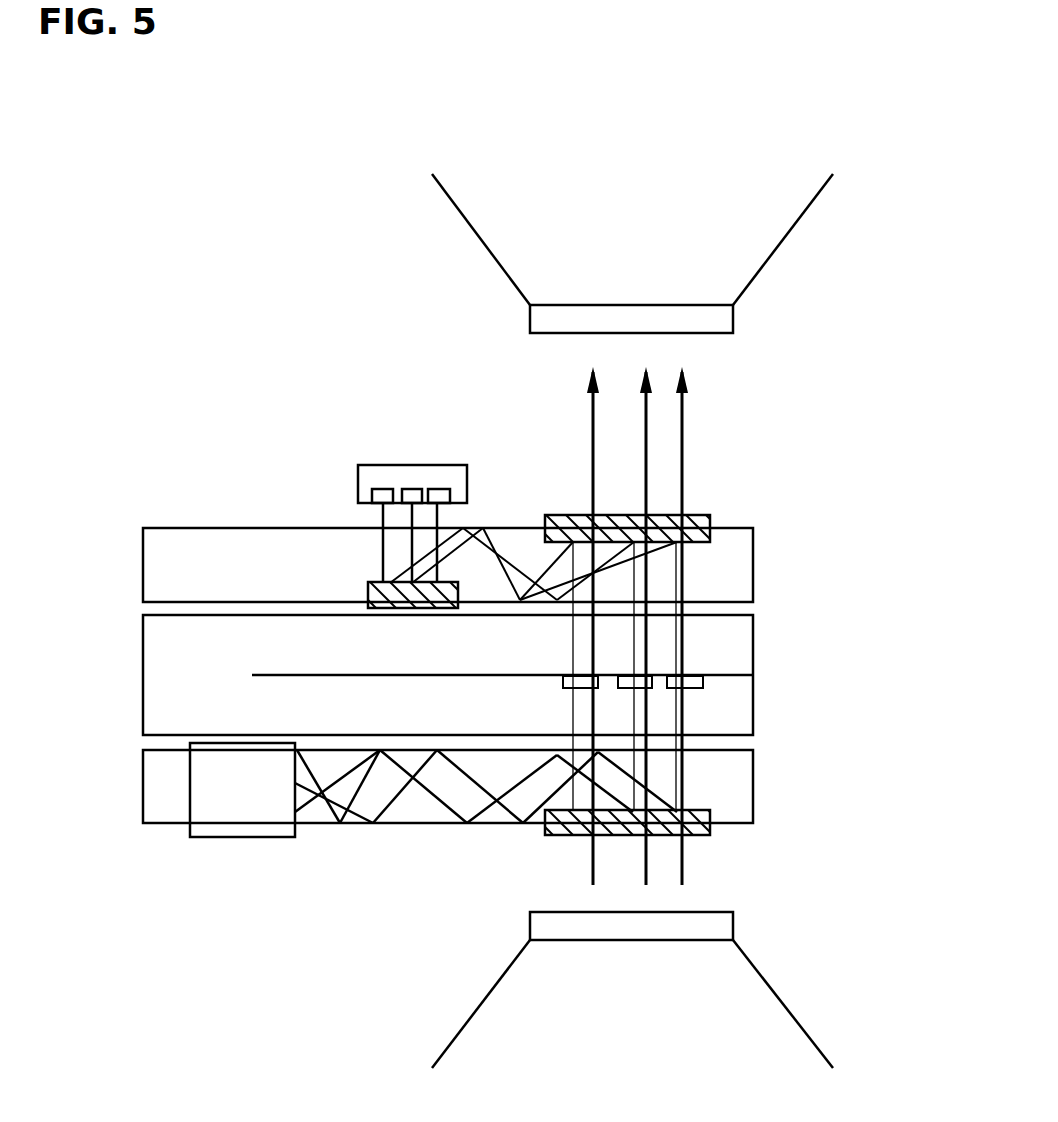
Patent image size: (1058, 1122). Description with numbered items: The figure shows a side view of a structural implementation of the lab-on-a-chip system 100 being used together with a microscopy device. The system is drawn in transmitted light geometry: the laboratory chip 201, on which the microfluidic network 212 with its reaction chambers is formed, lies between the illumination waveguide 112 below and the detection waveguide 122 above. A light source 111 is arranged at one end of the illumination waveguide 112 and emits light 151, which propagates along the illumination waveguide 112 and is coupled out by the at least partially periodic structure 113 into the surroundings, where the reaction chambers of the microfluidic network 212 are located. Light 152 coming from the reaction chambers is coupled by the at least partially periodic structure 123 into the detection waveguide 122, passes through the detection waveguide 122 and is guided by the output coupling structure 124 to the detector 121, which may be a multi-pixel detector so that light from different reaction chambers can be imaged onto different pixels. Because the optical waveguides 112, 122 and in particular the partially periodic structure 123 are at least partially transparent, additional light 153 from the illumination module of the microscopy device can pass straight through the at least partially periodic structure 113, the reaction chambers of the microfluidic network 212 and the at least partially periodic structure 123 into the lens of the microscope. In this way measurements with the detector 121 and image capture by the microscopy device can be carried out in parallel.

The lab-on-a-chip system 100 is at (820, 463).
The light source 111 is at (242, 790).
The illumination waveguide 112 is at (147, 773).
The at least partially periodic structure 113 is at (710, 833).
The detector 121 is at (465, 478).
The detection waveguide 122 is at (745, 575).
The at least partially periodic structure 123 is at (710, 522).
The output coupling structure 124 is at (368, 583).
The light 151 is at (580, 763).
The light 152 is at (580, 635).
The additional light 153 is at (590, 412).
The laboratory chip 201 is at (147, 676).
The microfluidic network 212 is at (822, 688).